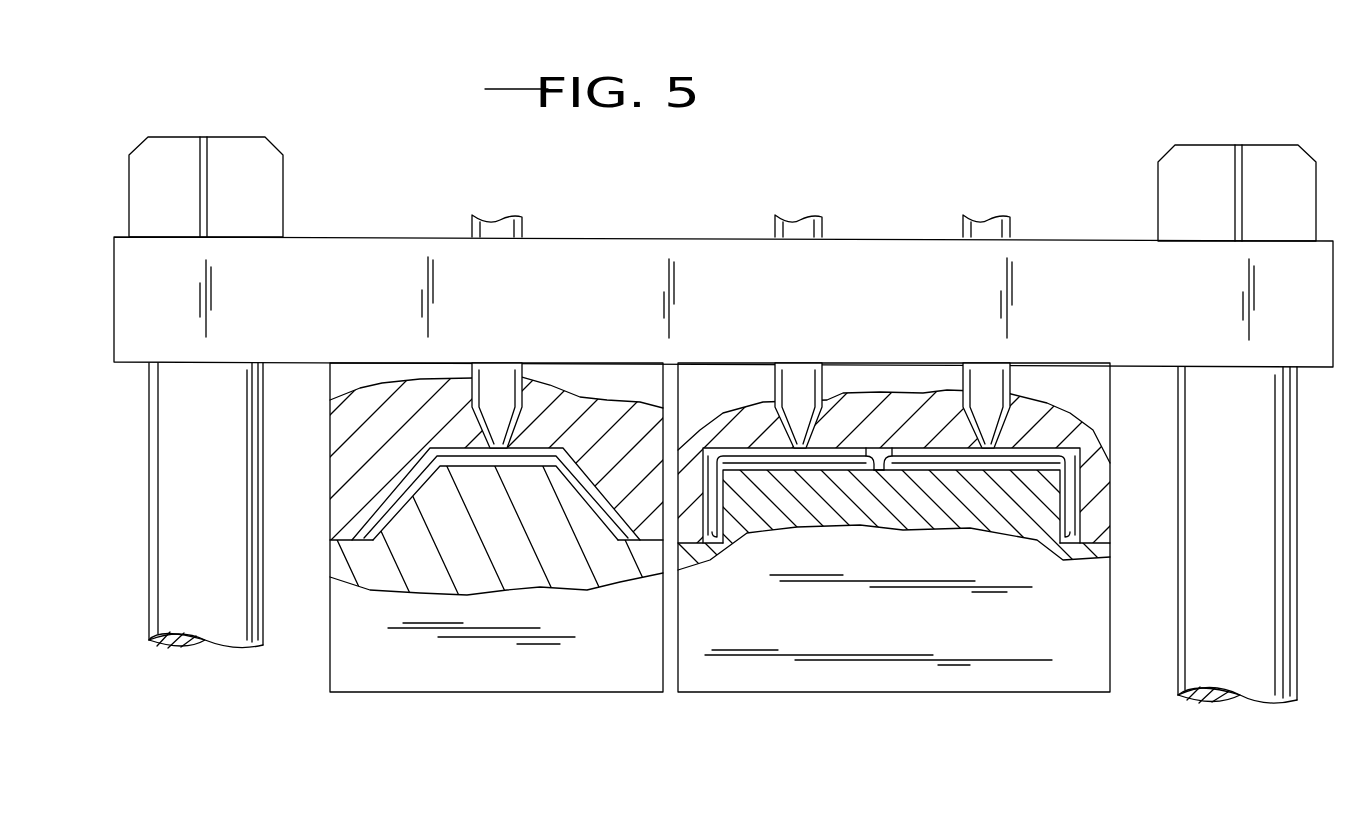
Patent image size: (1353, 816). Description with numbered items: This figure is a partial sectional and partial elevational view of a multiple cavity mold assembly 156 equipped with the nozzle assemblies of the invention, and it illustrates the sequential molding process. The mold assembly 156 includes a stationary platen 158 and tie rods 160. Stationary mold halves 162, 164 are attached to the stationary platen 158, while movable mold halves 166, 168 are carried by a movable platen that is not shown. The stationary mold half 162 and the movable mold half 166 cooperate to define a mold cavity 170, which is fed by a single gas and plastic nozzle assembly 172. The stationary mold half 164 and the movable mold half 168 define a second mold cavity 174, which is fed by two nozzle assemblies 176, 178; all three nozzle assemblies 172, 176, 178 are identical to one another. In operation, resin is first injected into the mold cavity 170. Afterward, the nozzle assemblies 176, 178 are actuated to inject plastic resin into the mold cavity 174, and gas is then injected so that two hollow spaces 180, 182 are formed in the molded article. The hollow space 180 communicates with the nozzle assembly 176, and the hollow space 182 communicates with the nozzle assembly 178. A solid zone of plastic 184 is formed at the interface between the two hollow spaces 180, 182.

The multiple cavity mold assembly 156 is at (322, 110).
The stationary platen 158 is at (421, 236).
The tie rods 160 is at (278, 381).
The stationary mold half 162 is at (330, 463).
The stationary mold half 164 is at (1112, 460).
The movable mold half 166 is at (330, 670).
The movable mold half 168 is at (1113, 640).
The mold cavity 170 is at (347, 538).
The gas and plastic nozzle assembly 172 is at (505, 383).
The mold cavity 174 is at (1113, 527).
The nozzle assembly 176 is at (830, 385).
The nozzle assembly 178 is at (1017, 390).
The hollow space 180 is at (742, 456).
The hollow space 182 is at (1063, 460).
The solid zone of plastic 184 is at (878, 455).